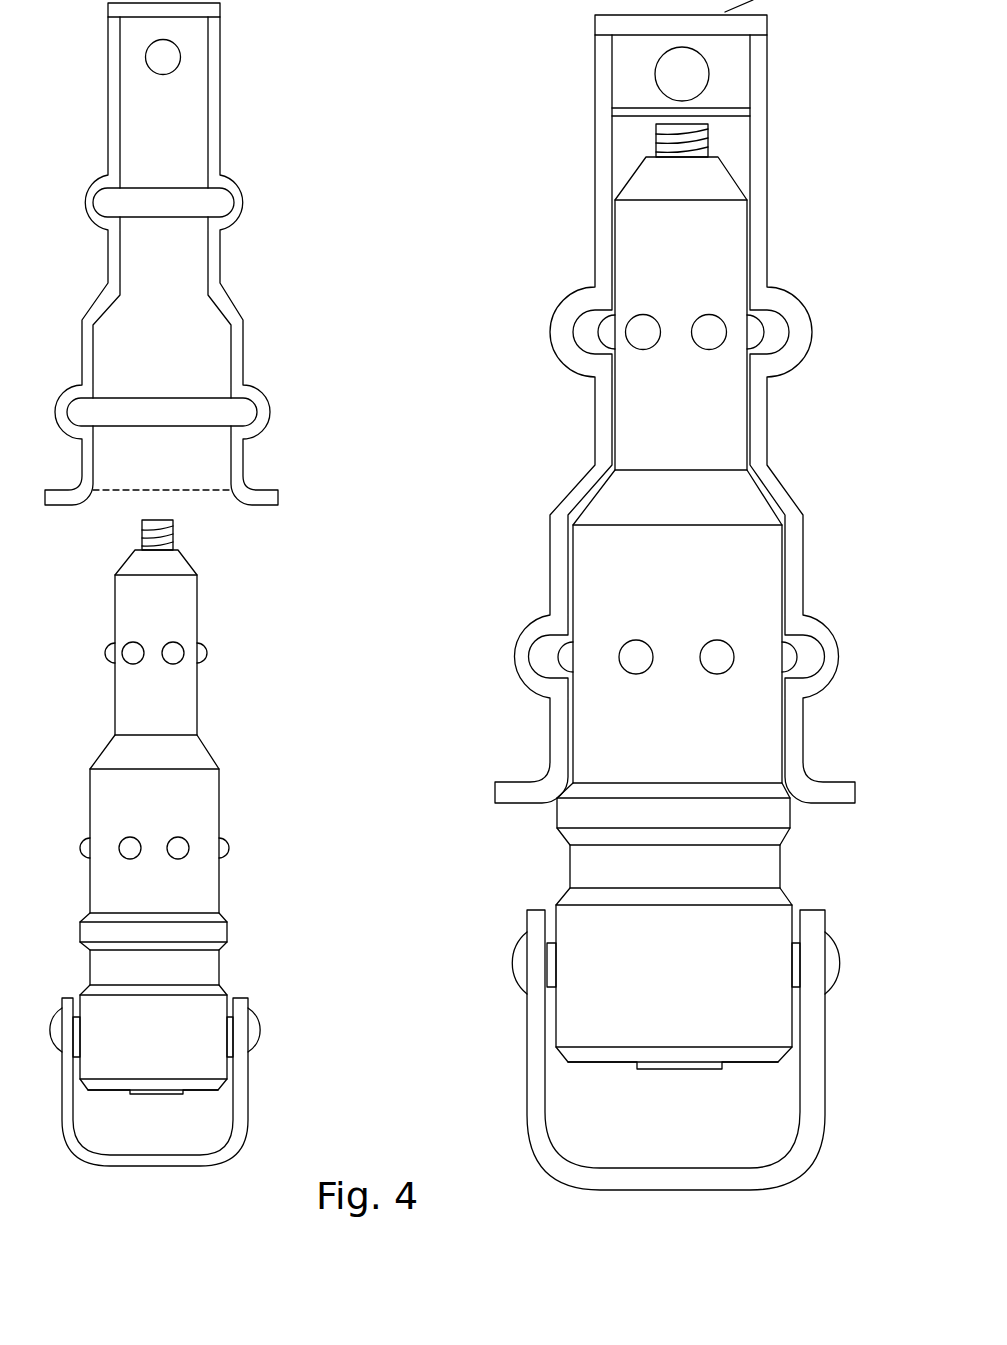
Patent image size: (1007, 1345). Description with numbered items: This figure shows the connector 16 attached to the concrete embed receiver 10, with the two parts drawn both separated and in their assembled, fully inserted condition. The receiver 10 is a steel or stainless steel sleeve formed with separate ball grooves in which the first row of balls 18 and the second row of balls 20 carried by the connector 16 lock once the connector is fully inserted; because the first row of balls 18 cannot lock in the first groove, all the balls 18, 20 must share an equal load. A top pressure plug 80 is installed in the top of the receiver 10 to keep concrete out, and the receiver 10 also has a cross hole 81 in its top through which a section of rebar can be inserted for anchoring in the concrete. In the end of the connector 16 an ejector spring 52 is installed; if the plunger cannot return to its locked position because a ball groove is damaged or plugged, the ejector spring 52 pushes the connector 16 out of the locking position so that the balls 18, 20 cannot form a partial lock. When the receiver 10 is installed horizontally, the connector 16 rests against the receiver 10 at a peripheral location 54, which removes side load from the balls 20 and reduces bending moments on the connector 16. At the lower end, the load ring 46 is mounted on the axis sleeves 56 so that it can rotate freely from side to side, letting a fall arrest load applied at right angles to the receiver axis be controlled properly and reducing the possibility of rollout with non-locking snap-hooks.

The concrete embed receiver 10 is at (768, 233).
The connector 16 is at (748, 260).
The first row of balls 18 is at (757, 320).
The second row of balls 20 is at (797, 655).
The load ring 46 is at (825, 1115).
The ejector spring 52 is at (650, 130).
The peripheral location 54 is at (787, 790).
The axis sleeves 56 is at (840, 985).
The top pressure plug 80 is at (783, 0).
The cross hole 81 is at (710, 75).